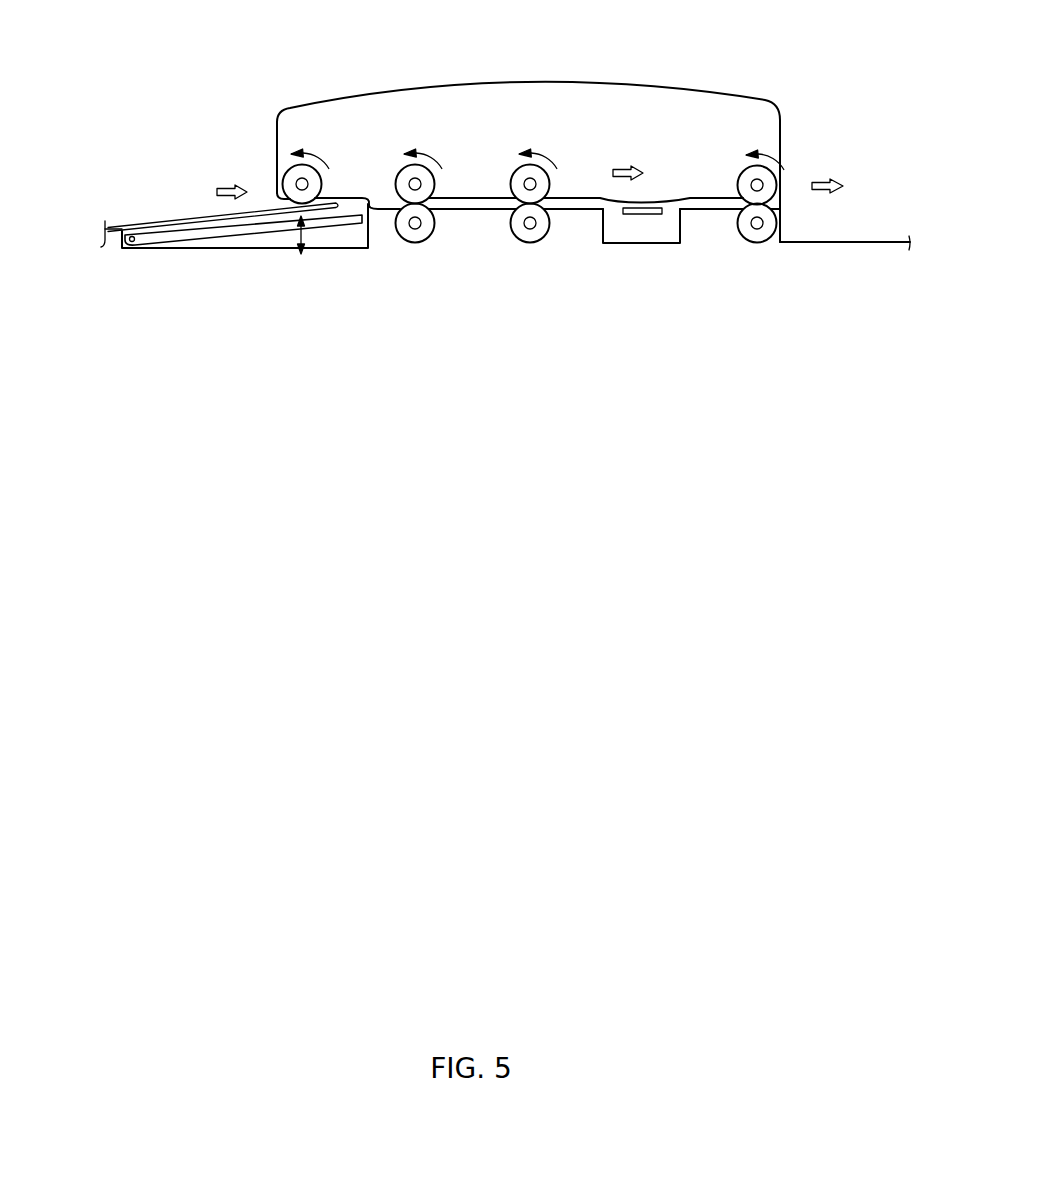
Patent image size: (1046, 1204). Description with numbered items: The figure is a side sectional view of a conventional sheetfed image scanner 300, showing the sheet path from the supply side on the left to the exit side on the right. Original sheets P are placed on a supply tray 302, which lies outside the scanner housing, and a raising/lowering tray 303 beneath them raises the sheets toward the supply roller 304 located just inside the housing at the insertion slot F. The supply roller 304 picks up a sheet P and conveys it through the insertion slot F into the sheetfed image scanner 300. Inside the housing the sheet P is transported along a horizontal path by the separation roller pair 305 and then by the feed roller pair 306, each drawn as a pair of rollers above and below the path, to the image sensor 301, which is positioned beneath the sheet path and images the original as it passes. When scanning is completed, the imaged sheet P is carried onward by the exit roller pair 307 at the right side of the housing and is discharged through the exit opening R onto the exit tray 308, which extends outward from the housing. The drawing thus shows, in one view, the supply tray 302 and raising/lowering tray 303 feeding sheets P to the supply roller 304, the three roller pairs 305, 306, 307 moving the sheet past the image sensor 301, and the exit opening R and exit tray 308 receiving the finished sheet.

The sheetfed image scanner 300 is at (525, 69).
The image sensor 301 is at (670, 233).
The supply tray 302 is at (172, 219).
The raising/lowering tray 303 is at (238, 224).
The supply roller 304 is at (314, 183).
The separation roller pair 305 is at (422, 234).
The feed roller pair 306 is at (533, 234).
The exit roller pair 307 is at (762, 233).
The exit tray 308 is at (858, 241).
The original sheet P is at (137, 226).
The insertion slot F is at (263, 195).
The exit opening R is at (792, 192).